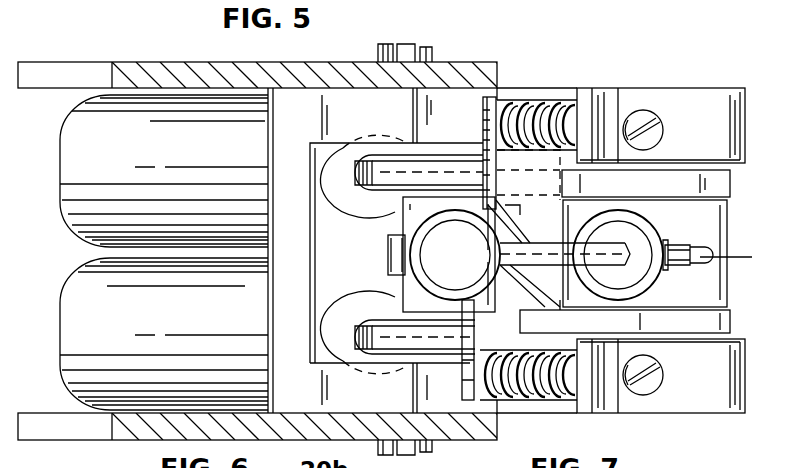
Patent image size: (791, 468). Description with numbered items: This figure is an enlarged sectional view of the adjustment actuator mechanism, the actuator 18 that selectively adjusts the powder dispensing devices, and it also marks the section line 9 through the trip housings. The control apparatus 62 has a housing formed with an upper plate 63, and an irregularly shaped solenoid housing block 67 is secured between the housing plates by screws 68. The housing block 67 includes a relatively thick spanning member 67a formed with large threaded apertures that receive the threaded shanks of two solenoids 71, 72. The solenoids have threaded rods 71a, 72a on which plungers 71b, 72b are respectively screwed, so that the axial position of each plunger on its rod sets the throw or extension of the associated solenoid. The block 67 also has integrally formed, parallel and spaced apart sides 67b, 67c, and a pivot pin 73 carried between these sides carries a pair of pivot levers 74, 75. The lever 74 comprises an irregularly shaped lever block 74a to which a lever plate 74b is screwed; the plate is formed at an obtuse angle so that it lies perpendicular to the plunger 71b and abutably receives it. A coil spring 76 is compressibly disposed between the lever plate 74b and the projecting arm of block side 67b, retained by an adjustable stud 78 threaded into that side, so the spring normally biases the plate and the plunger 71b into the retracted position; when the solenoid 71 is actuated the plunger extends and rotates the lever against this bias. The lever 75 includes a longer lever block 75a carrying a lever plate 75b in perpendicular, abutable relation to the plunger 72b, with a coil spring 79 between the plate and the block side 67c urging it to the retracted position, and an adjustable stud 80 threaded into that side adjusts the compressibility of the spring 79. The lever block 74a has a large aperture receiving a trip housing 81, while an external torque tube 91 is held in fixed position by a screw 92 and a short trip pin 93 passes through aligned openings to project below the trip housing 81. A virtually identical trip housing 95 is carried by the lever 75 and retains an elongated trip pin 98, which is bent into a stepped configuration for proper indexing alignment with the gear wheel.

The actuator 18 is at (114, 52).
The control apparatus 62 is at (449, 63).
The upper plate 63 is at (158, 72).
The solenoid housing block 67 is at (528, 91).
The spanning member 67a is at (268, 290).
The block side 67b is at (690, 100).
The block side 67c is at (713, 400).
The screws 68 is at (404, 44).
The solenoid 71 is at (76, 170).
The threaded rod 71a is at (345, 160).
The plunger 71b is at (425, 160).
The solenoid 72 is at (80, 306).
The threaded rod 72a is at (348, 330).
The plunger 72b is at (405, 352).
The pivot pin 73 is at (688, 160).
The pivot lever 74 is at (709, 270).
The lever block 74a is at (578, 300).
The lever plate 74b is at (492, 98).
The pivot lever 75 is at (404, 215).
The lever block 75a is at (408, 288).
The lever plate 75b is at (470, 402).
The coil spring 76 is at (560, 105).
The adjustable stud 78 is at (642, 110).
The coil spring 79 is at (548, 400).
The adjustable stud 80 is at (647, 396).
The trip housing 81 is at (650, 223).
The external torque tube 91 is at (618, 212).
The screw 92 is at (676, 268).
The trip pin 93 is at (688, 252).
The trip housing 95 is at (470, 267).
The trip pin 98 is at (628, 252).
The section line 9- 9 is at (550, 246).